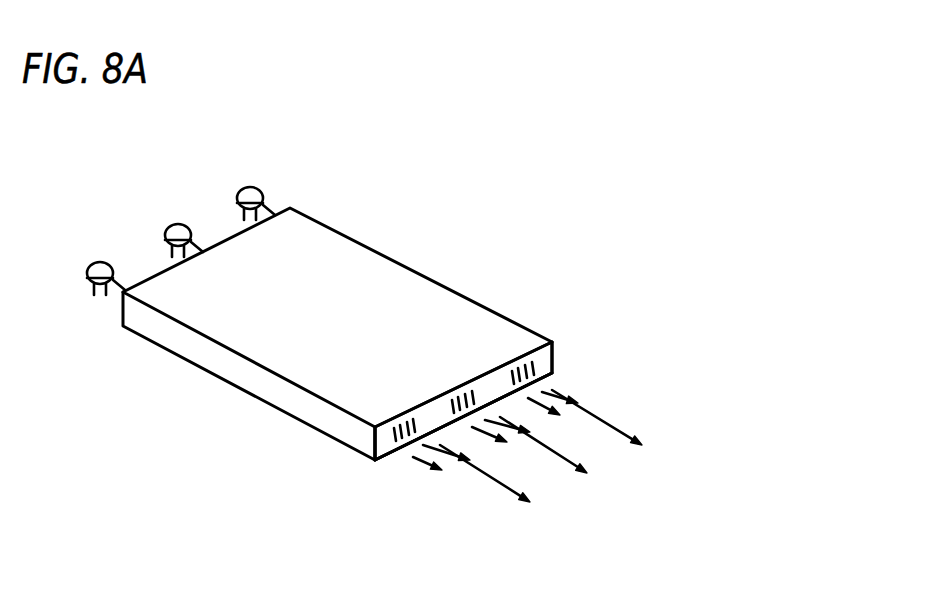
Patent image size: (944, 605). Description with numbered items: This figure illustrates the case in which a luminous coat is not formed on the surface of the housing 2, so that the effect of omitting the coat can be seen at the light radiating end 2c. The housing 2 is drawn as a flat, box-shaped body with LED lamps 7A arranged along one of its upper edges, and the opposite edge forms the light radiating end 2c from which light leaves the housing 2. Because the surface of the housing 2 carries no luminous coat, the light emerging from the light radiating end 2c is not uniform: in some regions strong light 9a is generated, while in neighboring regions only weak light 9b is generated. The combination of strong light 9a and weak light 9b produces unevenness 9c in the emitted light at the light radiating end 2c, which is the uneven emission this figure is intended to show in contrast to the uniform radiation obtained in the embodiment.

The housing 2 is at (395, 278).
The light radiating end 2c is at (540, 363).
The LED lamp 7A is at (250, 197).
The strong light 9a is at (606, 432).
The weak light 9b is at (562, 398).
The unevenness in emitted light 9c is at (380, 462).